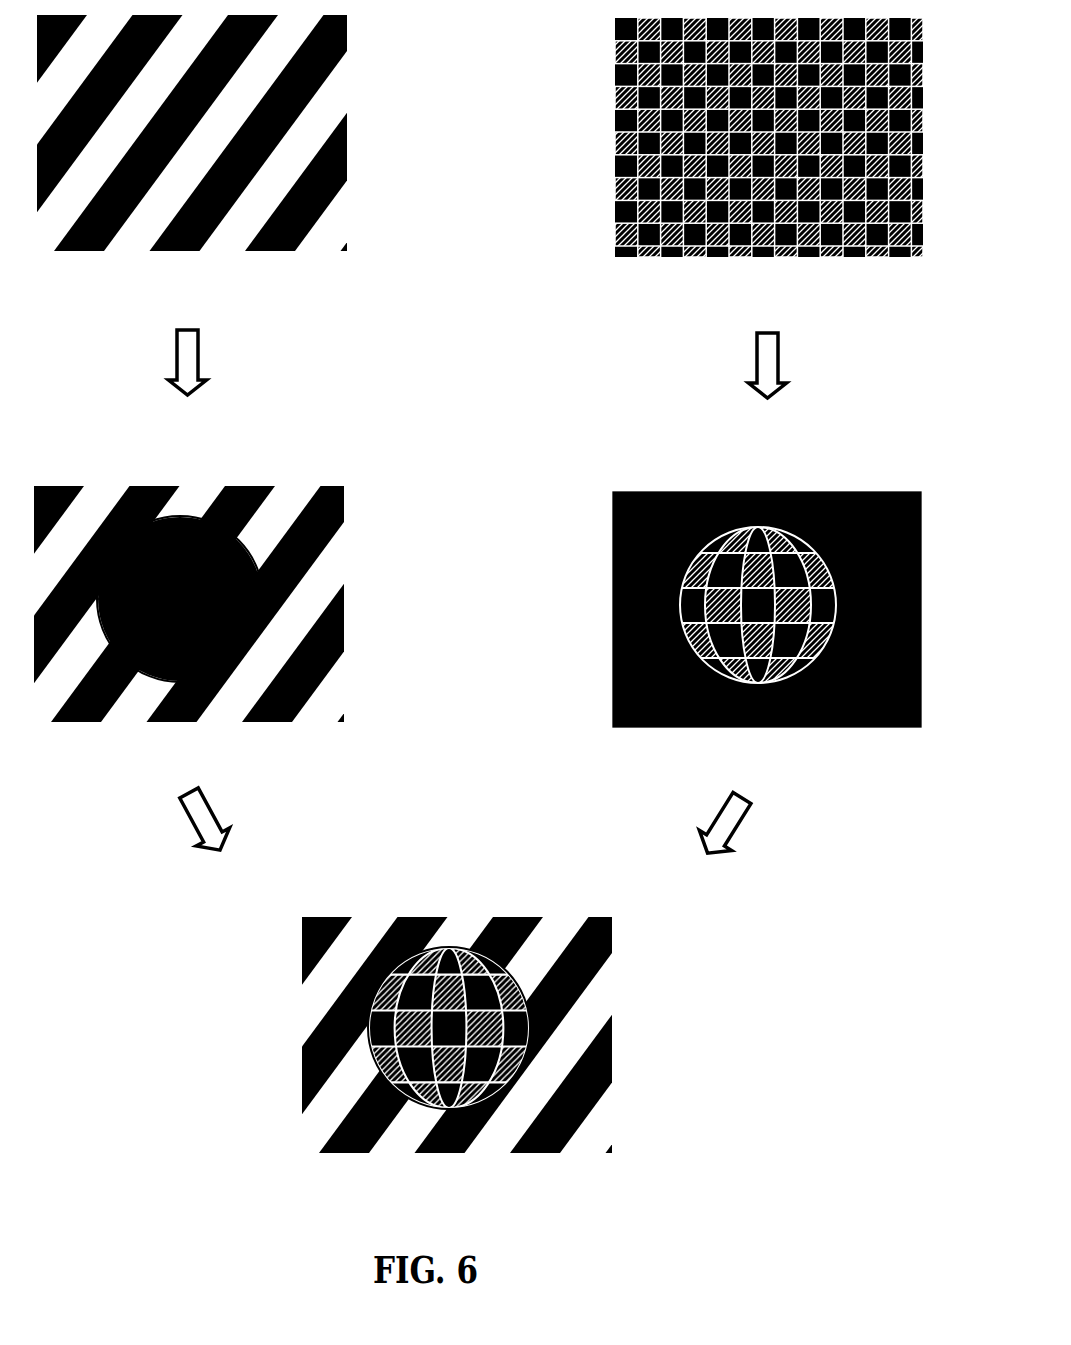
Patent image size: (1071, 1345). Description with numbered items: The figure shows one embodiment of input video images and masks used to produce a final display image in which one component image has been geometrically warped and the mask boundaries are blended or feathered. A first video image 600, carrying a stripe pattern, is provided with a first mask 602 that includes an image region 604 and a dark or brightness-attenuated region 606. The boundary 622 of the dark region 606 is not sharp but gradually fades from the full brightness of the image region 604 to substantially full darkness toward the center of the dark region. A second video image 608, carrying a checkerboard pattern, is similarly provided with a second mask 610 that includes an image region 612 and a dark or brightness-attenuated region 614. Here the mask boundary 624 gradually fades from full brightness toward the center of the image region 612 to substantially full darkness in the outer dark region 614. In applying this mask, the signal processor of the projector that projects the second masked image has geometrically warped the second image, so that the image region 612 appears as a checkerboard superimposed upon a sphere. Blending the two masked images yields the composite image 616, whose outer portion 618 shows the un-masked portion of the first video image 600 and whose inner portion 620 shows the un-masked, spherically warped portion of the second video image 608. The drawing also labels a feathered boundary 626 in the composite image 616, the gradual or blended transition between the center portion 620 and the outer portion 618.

The first video image 600 is at (313, 127).
The first mask 602 is at (281, 601).
The image region 604 is at (327, 572).
The dark region 606 is at (189, 518).
The second video image 608 is at (614, 127).
The second mask 610 is at (706, 564).
The image region 612 is at (613, 660).
The dark region 614 is at (613, 540).
The composite image 616 is at (479, 1024).
The outer portion 618 is at (333, 990).
The inner portion 620 is at (528, 1067).
The boundary 622 is at (152, 680).
The mask boundary 624 is at (808, 492).
The blended edge of sphere in composite image 626 is at (375, 1063).